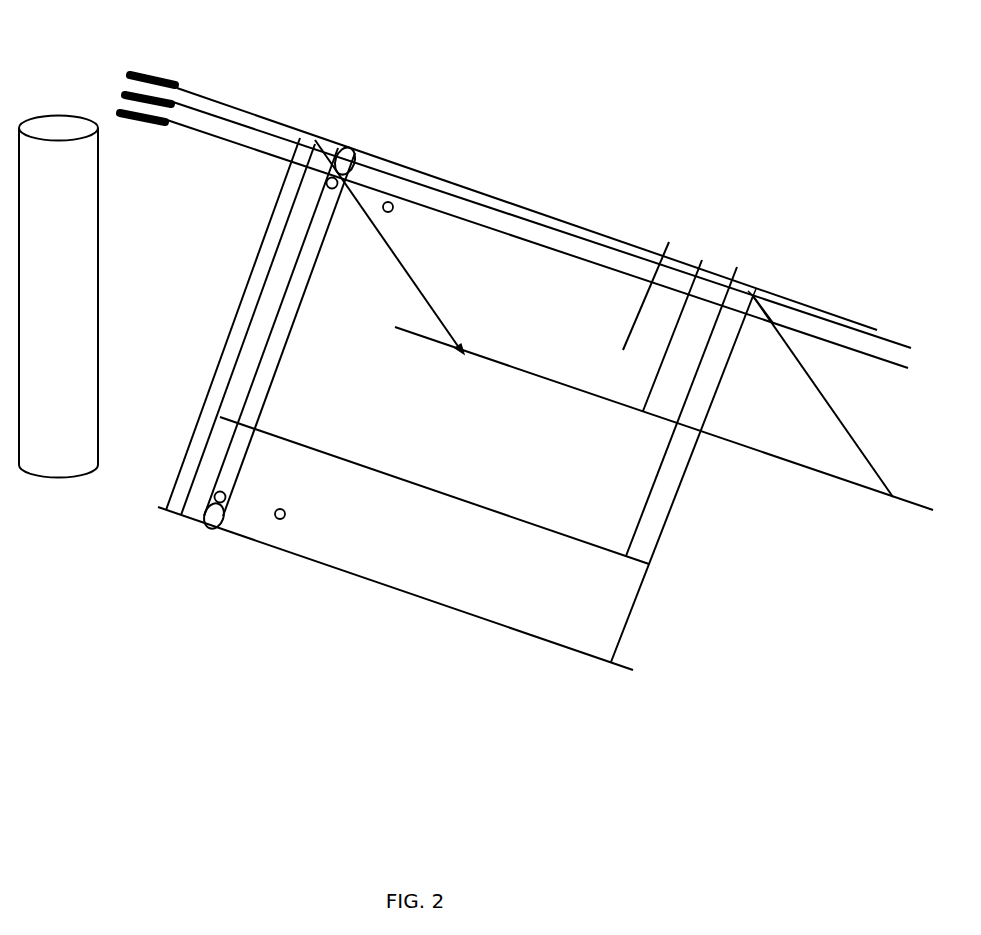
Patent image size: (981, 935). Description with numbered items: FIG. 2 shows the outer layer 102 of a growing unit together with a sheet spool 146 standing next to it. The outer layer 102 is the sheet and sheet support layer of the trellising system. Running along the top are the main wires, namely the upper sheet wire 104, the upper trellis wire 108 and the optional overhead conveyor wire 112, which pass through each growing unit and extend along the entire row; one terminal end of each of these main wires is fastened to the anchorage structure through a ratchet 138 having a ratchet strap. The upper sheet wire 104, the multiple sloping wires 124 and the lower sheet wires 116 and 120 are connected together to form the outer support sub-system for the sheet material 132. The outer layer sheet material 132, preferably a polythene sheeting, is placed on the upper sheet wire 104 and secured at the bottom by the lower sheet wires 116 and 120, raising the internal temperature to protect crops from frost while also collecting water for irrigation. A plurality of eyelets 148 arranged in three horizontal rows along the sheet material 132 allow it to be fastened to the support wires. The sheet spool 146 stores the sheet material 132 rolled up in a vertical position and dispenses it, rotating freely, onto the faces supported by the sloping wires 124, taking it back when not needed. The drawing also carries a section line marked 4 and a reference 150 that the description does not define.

The outer layer 102 is at (542, 95).
The upper sheet wire 104 is at (555, 220).
The upper trellis wire 108 is at (582, 234).
The overhead conveyor wire 112 is at (603, 264).
The lower sheet wire 116 is at (351, 575).
The lower sheet wire 120 is at (759, 397).
The sloping wires 124 is at (234, 323).
The outer layer sheet material 132 is at (255, 376).
The ratchet 138 is at (165, 74).
The sheet spool 146 is at (98, 230).
The eyelets 148 is at (214, 495).
The end cap 150 is at (204, 512).
The section line for FIG. 4 is at (650, 282).